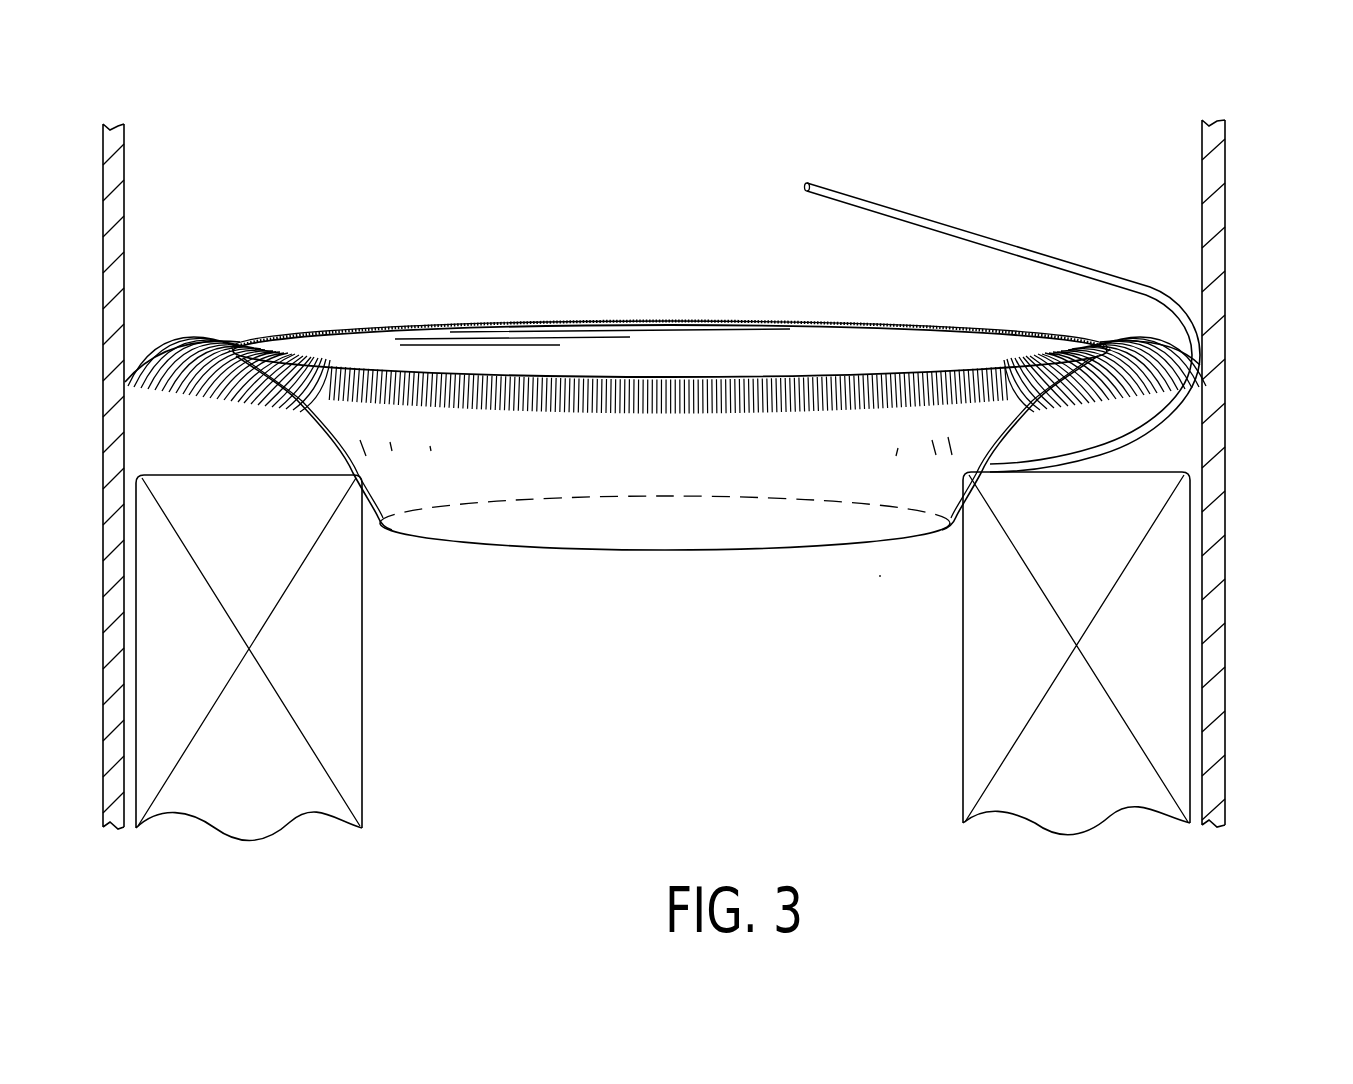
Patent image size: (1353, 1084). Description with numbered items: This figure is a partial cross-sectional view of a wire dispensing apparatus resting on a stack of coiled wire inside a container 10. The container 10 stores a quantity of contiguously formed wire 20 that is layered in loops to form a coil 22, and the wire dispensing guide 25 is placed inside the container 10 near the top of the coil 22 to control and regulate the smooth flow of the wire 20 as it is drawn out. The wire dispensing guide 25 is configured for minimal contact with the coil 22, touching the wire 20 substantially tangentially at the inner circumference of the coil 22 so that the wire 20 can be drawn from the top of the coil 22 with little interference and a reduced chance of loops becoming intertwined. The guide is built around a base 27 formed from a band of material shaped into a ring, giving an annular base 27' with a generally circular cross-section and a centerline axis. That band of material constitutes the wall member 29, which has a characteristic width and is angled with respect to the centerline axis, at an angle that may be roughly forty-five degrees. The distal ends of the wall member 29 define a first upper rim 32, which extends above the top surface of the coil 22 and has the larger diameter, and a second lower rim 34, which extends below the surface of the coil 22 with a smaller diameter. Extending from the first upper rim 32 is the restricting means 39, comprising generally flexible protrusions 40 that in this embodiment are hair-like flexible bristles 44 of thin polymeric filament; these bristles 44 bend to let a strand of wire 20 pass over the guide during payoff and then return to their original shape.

The container 10 is at (115, 287).
The wire 20 is at (1050, 252).
The coil 22 is at (348, 630).
The wire dispensing guide 25 is at (582, 303).
The base 27 is at (667, 497).
The annular base 27' is at (665, 586).
The wall member 29 is at (575, 538).
The first upper rim 32 is at (666, 336).
The second lower rim 34 is at (880, 572).
The restricting means 39 is at (207, 327).
The protrusions 40 is at (313, 323).
The flexible bristles 44 is at (1205, 362).